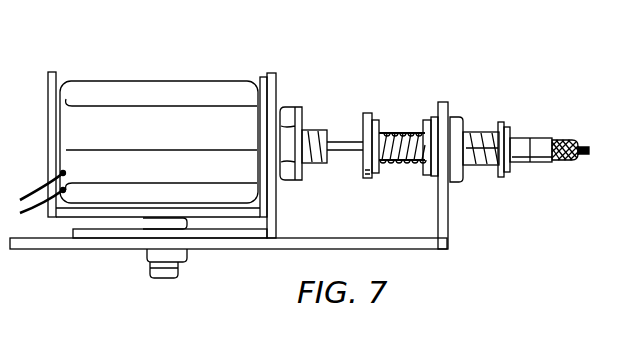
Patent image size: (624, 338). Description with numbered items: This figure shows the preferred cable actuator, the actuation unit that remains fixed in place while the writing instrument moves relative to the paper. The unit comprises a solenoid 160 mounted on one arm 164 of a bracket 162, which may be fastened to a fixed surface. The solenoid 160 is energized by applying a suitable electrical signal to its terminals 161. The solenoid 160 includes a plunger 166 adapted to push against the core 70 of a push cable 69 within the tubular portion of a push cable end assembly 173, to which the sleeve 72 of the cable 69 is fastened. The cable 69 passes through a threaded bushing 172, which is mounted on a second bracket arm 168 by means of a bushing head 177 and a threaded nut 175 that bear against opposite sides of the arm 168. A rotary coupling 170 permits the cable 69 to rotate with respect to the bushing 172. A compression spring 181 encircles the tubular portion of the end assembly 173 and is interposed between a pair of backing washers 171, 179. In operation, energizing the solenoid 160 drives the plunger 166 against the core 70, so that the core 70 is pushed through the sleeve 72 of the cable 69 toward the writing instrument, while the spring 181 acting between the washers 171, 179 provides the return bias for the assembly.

The solenoid 160 is at (160, 93).
The terminals 161 is at (32, 195).
The bracket 162 is at (62, 249).
The bracket arm 164 is at (260, 203).
The plunger 166 is at (343, 141).
The second bracket arm 168 is at (443, 208).
The rotary coupling 170 is at (530, 139).
The backing washer 171 is at (377, 113).
The threaded bushing 172 is at (477, 133).
The push cable end assembly 173 is at (365, 178).
The threaded nut 175 is at (455, 122).
The bushing head 177 is at (434, 117).
The backing washer 179 is at (426, 176).
The compression spring 181 is at (403, 132).
The push cable 69 is at (557, 163).
The core 70 is at (585, 146).
The sleeve 72 is at (585, 155).